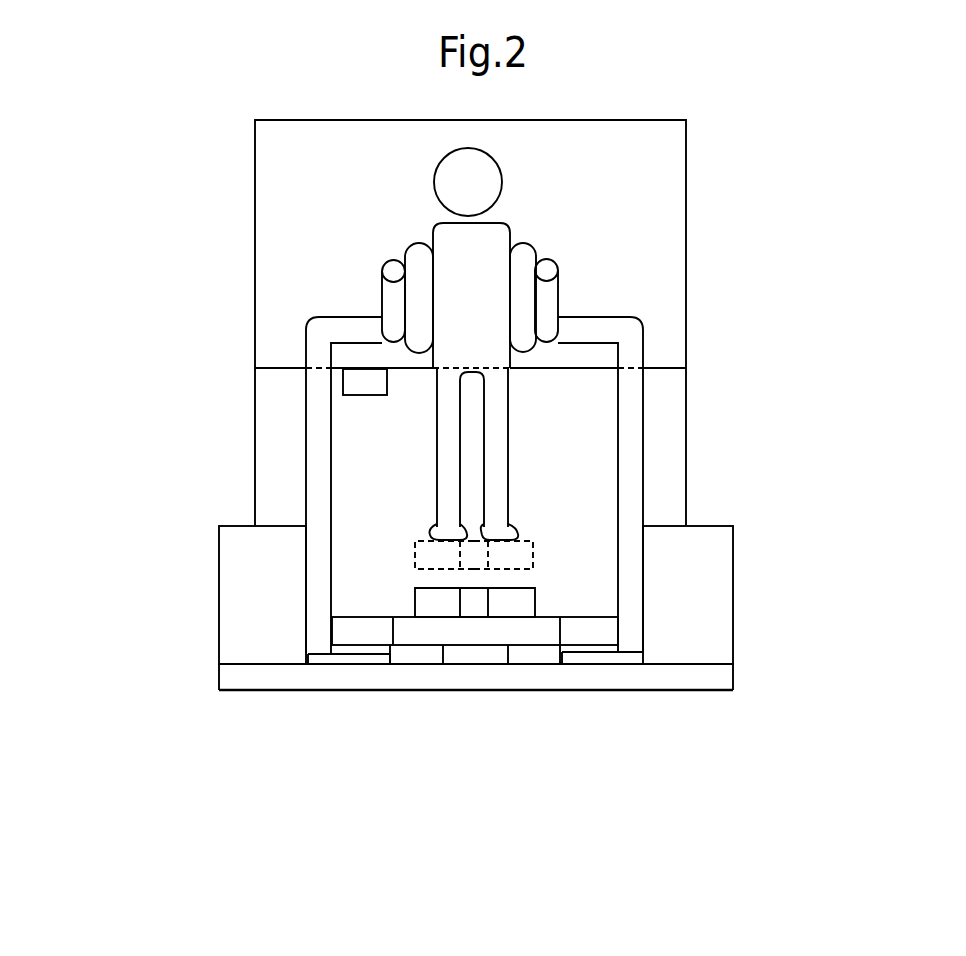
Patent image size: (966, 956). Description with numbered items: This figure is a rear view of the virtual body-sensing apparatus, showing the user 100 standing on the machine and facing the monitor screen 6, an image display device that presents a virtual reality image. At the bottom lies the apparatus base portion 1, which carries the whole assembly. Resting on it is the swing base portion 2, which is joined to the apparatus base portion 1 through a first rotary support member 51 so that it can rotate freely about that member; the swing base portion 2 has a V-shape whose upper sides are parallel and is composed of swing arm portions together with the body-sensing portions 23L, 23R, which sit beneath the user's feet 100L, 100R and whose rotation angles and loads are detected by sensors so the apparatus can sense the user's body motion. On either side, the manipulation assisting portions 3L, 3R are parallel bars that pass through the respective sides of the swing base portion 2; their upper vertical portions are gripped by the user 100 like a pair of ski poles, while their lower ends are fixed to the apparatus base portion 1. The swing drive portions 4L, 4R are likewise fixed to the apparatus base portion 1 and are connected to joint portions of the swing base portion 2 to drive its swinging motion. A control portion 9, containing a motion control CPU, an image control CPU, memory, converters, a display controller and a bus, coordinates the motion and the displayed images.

The apparatus base portion 1 is at (713, 675).
The swing base portion 2 is at (405, 628).
The manipulation assisting portion 3L is at (313, 401).
The manipulation assisting portion 3R is at (632, 398).
The swing drive portion 4L is at (247, 615).
The swing drive portion 4R is at (713, 558).
The monitor screen 6 is at (672, 158).
The control portion 9 is at (363, 377).
The body-sensing portion 23L is at (433, 556).
The body-sensing portion 23R is at (515, 556).
The first rotary support member 51 is at (483, 658).
The user 100 is at (490, 248).
The foot 100L is at (432, 533).
The foot 100R is at (506, 533).